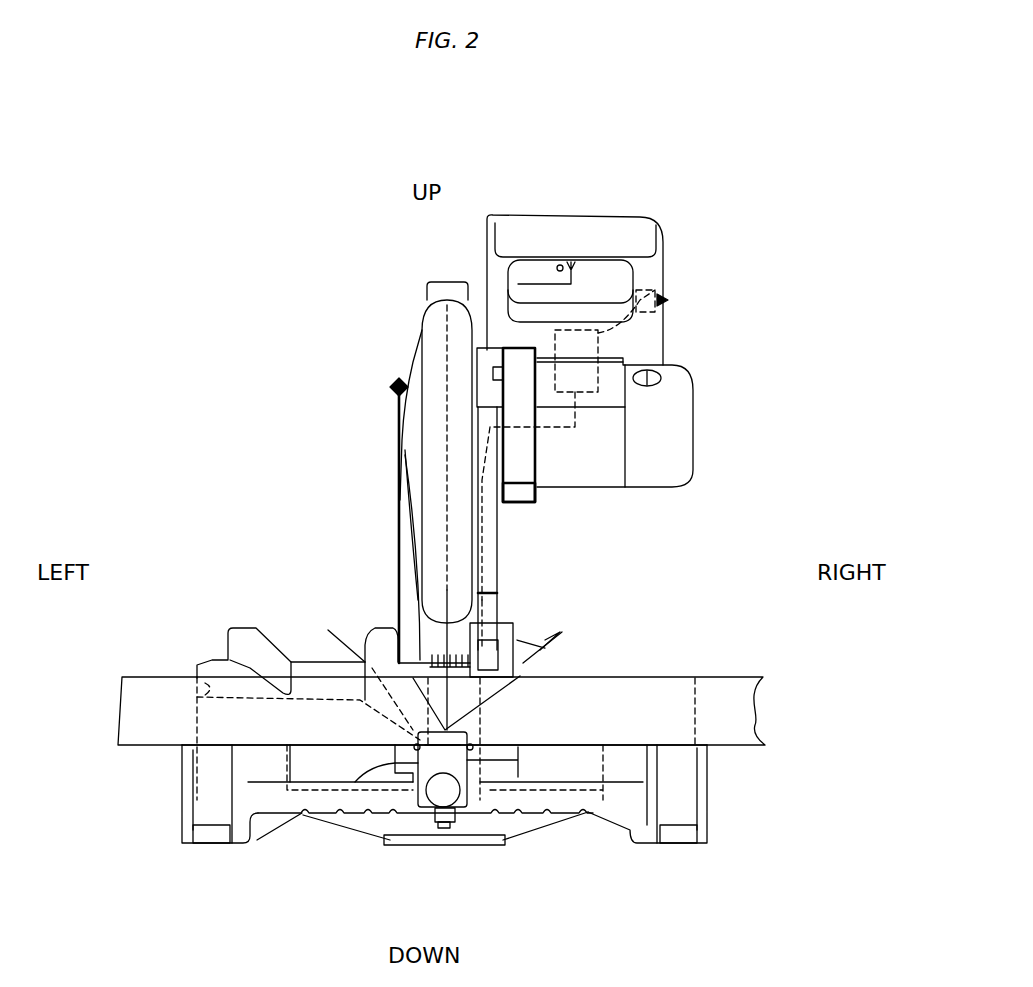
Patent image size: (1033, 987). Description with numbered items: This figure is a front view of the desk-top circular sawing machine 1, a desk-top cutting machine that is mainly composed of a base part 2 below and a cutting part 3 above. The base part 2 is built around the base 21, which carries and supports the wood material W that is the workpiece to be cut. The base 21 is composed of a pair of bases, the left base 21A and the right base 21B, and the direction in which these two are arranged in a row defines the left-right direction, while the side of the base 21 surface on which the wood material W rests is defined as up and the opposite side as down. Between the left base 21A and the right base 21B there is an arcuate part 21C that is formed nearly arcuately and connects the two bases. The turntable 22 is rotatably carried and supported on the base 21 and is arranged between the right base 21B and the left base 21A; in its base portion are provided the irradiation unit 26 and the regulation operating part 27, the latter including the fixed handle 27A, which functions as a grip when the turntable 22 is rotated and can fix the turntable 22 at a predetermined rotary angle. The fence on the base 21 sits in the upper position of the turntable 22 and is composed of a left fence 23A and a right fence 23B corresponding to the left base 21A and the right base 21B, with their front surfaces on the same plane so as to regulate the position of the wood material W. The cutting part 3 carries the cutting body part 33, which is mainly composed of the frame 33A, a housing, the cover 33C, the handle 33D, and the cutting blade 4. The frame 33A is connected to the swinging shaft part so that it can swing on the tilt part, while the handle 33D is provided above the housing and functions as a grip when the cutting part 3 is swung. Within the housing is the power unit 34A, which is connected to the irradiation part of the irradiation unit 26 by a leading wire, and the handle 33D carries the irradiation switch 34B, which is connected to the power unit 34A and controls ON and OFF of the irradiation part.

The desk-top circular sawing machine 1 is at (138, 338).
The base part 2 is at (826, 782).
The cutting part 3 is at (826, 374).
The cutting blade 4 is at (399, 562).
The base 21 is at (617, 827).
The left base 21A is at (213, 795).
The right base 21B is at (673, 790).
The arcuate part 21C is at (505, 798).
The turntable 22 is at (337, 770).
The left fence 23A is at (246, 630).
The right fence 23B is at (637, 683).
The irradiation unit 26 is at (373, 767).
The regulation operating part 27 is at (440, 834).
The fixed handle 27A is at (437, 802).
The cutting body part 33 is at (642, 392).
The frame 33A is at (447, 506).
The cover 33C is at (610, 228).
The handle 33D is at (533, 273).
The power unit 34A is at (618, 341).
The irradiation switch 34B is at (668, 300).
The wood material W is at (725, 678).